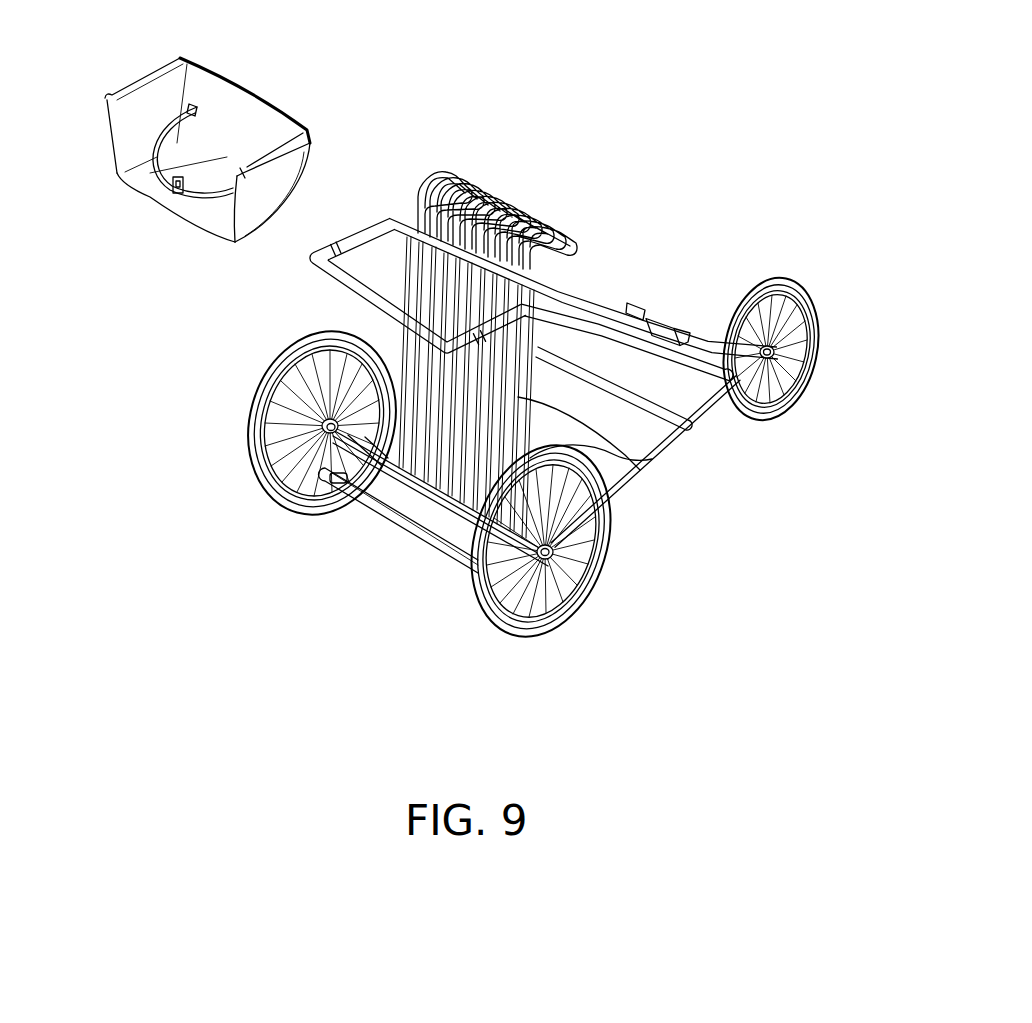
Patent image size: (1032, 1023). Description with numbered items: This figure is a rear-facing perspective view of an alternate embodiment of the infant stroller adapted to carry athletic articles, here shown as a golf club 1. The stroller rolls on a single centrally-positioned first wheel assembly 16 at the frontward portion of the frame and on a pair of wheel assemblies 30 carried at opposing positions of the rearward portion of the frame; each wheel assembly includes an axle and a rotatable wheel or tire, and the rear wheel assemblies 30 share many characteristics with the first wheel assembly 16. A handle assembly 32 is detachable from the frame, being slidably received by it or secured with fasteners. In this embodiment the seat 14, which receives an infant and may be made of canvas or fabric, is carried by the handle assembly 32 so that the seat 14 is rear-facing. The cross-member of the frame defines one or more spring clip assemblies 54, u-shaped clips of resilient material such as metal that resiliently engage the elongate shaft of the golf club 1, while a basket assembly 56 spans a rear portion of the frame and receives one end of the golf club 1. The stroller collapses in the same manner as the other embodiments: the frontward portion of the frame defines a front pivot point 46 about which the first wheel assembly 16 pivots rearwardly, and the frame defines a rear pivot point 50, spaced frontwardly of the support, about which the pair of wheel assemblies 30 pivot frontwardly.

The golf club 1 is at (656, 459).
The seat 14 is at (130, 86).
The first wheel assembly 16 is at (812, 306).
The pair of wheel assemblies 30 is at (590, 614).
The handle assembly 32 is at (341, 222).
The front pivot point 46 is at (680, 338).
The rear pivot point 50 is at (622, 483).
The spring clip assemblies 54 is at (540, 290).
The basket assembly 56 is at (381, 489).